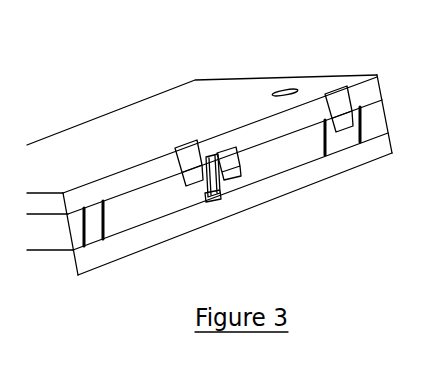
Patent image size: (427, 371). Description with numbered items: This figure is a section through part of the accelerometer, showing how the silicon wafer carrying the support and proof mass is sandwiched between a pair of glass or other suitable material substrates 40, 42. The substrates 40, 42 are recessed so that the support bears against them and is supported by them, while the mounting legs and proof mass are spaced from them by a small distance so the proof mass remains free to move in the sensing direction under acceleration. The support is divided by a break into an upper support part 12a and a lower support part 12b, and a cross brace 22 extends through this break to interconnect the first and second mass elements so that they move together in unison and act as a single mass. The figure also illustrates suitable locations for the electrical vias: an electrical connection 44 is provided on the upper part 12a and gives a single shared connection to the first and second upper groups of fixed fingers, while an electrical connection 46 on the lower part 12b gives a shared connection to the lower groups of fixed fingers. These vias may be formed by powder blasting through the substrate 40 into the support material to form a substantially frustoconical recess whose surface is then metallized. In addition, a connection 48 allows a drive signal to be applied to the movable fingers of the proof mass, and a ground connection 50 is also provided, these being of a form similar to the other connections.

The upper support part 12a is at (297, 148).
The lower support part 12b is at (120, 217).
The cross brace 22 is at (226, 180).
The substrate 40 is at (160, 236).
The substrate 42 is at (88, 150).
The electrical connection 44 is at (238, 148).
The electrical connection 46 is at (190, 187).
The connection 48 is at (341, 129).
The ground connection 50 is at (279, 89).